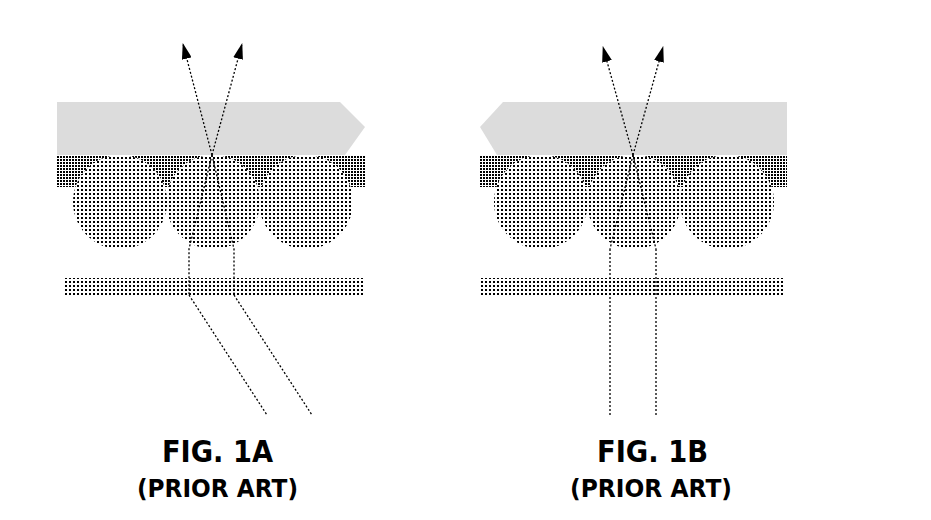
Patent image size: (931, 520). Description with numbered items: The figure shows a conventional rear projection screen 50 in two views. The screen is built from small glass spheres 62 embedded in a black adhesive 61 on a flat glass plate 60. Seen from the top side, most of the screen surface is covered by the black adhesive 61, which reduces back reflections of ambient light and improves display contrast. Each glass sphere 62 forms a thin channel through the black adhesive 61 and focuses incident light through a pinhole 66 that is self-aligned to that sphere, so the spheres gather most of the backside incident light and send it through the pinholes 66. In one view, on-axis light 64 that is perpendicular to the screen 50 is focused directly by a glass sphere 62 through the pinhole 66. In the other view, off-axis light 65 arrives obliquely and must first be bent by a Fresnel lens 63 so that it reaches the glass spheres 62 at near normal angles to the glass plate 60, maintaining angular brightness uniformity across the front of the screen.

In FIG. 1A, the rear projection screen 50 is at (365, 62).
In FIG. 1B, the rear projection screen 50 is at (757, 62).
In FIG. 1A, the glass plate 60 is at (288, 135).
In FIG. 1B, the glass plate 60 is at (518, 139).
In FIG. 1A, the black adhesive 61 is at (193, 171).
In FIG. 1B, the black adhesive 61 is at (615, 171).
In FIG. 1A, the glass spheres 62 is at (105, 211).
In FIG. 1B, the glass spheres 62 is at (530, 211).
In FIG. 1A, the Fresnel lens 63 is at (215, 275).
In FIG. 1B, the Fresnel lens 63 is at (632, 275).
In FIG. 1B, the on-axis light 64 is at (612, 333).
In FIG. 1A, the off-axis light 65 is at (254, 355).
In FIG. 1A, the pinhole 66 is at (183, 169).
In FIG. 1B, the pinhole 66 is at (600, 148).